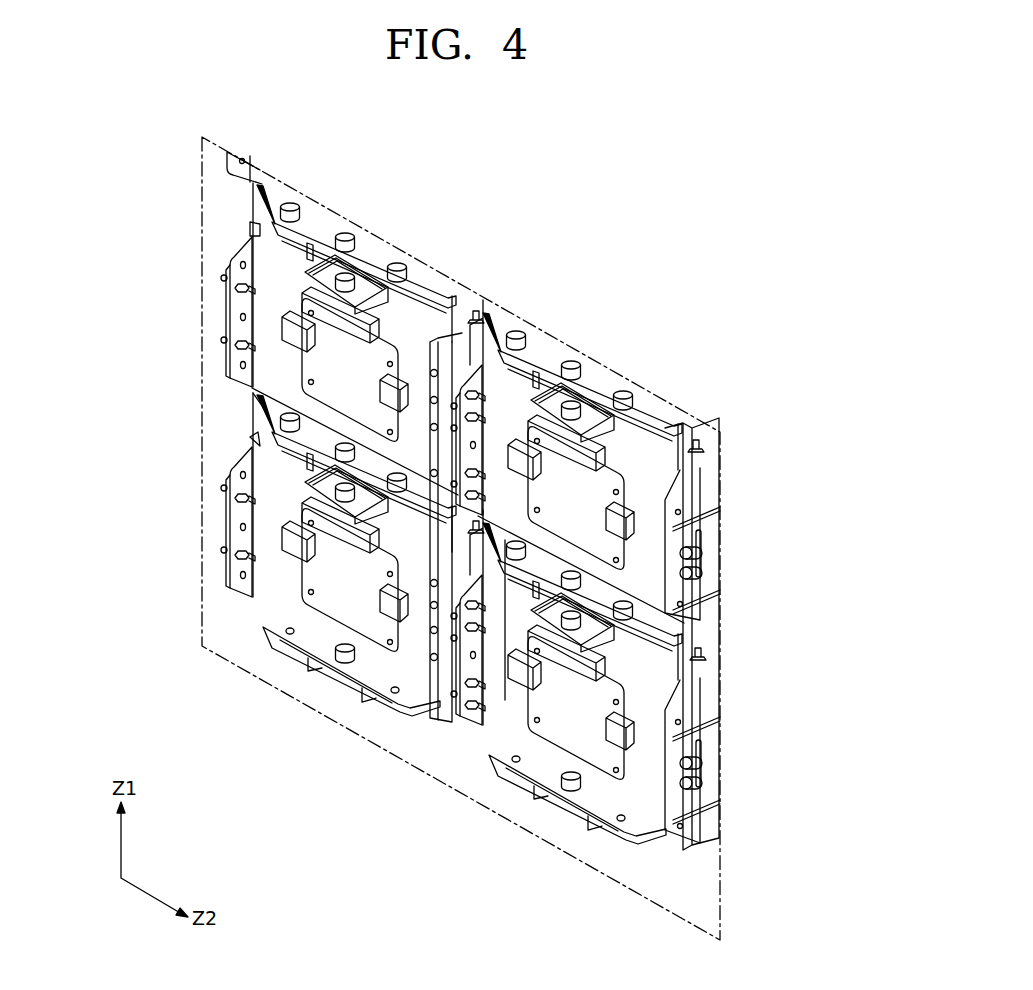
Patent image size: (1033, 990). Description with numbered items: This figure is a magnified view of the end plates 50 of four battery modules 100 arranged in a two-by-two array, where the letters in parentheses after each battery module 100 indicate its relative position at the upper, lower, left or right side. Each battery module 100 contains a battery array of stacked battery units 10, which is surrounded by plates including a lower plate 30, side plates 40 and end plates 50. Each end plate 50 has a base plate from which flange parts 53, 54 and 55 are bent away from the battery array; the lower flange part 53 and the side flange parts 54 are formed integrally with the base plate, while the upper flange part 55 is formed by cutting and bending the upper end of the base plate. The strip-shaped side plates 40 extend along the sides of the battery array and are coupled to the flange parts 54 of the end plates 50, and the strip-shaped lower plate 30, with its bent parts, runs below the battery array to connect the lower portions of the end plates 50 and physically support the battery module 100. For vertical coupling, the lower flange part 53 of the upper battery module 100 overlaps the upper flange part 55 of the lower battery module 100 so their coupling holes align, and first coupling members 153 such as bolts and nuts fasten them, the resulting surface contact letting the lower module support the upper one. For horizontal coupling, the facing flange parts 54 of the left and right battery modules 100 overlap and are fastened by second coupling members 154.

The battery unit 10 is at (710, 487).
The lower plate 30 is at (337, 672).
The side plate 40 is at (710, 780).
The end plate 50 is at (273, 272).
The lower flange part 53 is at (275, 413).
The flange part 54 is at (240, 307).
The upper flange part 55 is at (253, 437).
The battery module 100 is at (458, 533).
The first coupling member 153 is at (509, 540).
The second coupling member 154 is at (486, 360).